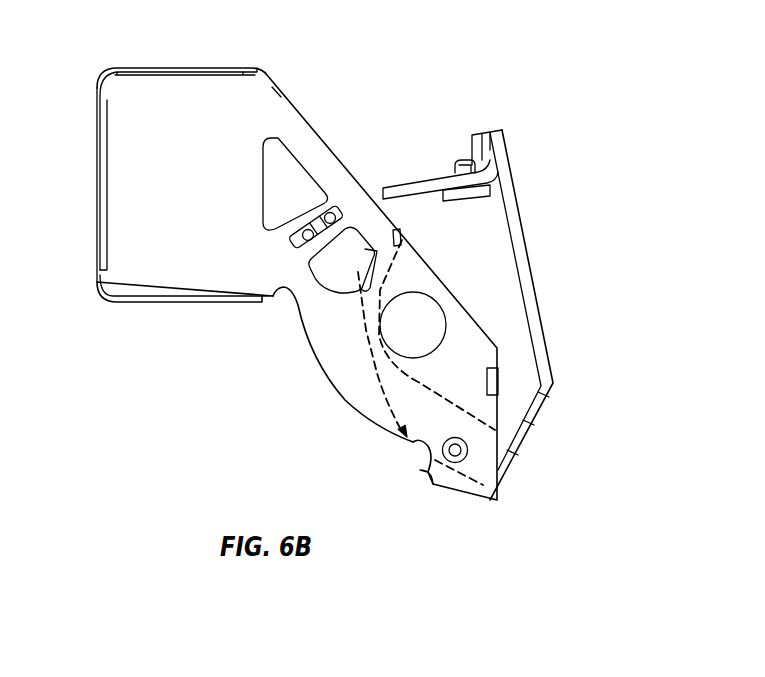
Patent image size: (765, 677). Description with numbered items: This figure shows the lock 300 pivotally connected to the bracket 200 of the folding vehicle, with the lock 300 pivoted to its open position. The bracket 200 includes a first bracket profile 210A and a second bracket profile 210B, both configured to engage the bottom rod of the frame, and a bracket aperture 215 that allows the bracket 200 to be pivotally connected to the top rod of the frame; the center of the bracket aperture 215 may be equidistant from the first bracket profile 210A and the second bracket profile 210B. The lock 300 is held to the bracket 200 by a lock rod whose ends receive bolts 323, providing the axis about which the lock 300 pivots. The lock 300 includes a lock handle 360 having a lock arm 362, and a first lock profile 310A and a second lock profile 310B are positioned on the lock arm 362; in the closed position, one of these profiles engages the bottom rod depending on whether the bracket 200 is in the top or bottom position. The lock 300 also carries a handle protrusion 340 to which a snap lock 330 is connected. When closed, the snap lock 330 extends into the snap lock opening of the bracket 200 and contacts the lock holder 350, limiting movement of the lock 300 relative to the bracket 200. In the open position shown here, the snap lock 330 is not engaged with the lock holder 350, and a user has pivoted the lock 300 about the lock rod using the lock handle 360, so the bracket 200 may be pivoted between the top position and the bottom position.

The bracket 200 is at (279, 290).
The first bracket profile 210A is at (421, 472).
The second bracket profile 210B is at (282, 293).
The bracket aperture 215 is at (428, 312).
The lock 300 is at (499, 287).
The first lock profile 310A is at (420, 443).
The second lock profile 310B is at (395, 248).
The bolts 323 is at (462, 450).
The snap lock 330 is at (420, 189).
The handle protrusion 340 is at (468, 194).
The lock holder 350 is at (333, 210).
The lock handle 360 is at (540, 320).
The lock arm 362 is at (373, 375).